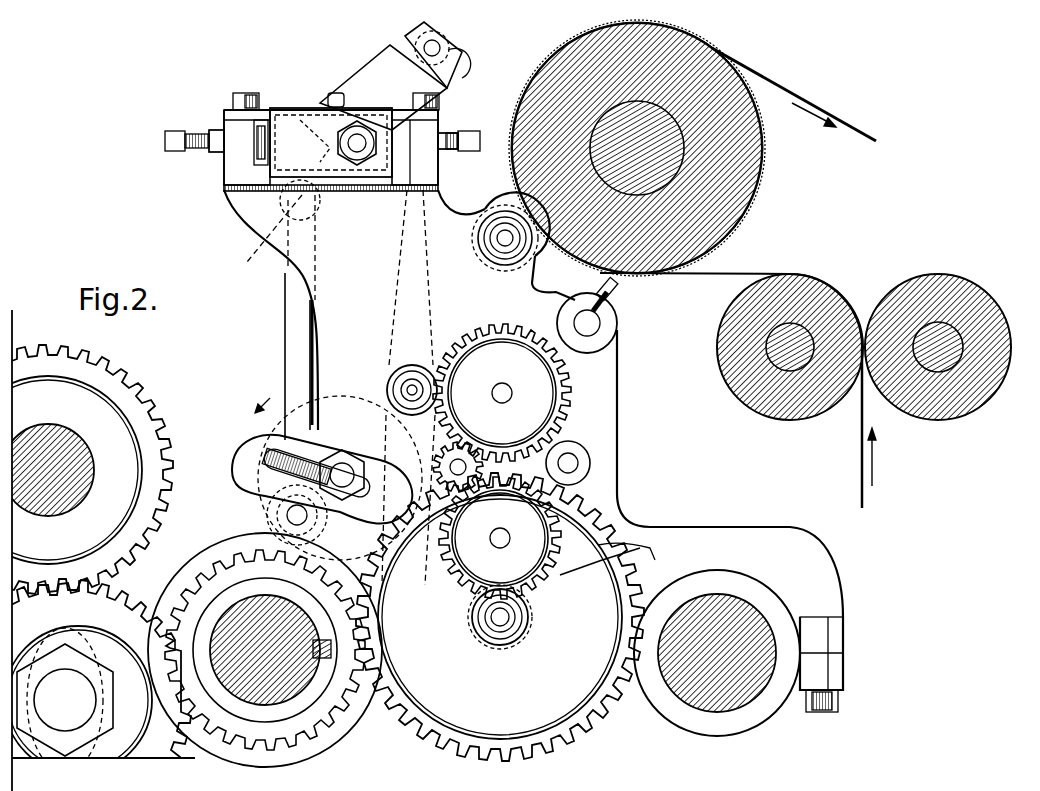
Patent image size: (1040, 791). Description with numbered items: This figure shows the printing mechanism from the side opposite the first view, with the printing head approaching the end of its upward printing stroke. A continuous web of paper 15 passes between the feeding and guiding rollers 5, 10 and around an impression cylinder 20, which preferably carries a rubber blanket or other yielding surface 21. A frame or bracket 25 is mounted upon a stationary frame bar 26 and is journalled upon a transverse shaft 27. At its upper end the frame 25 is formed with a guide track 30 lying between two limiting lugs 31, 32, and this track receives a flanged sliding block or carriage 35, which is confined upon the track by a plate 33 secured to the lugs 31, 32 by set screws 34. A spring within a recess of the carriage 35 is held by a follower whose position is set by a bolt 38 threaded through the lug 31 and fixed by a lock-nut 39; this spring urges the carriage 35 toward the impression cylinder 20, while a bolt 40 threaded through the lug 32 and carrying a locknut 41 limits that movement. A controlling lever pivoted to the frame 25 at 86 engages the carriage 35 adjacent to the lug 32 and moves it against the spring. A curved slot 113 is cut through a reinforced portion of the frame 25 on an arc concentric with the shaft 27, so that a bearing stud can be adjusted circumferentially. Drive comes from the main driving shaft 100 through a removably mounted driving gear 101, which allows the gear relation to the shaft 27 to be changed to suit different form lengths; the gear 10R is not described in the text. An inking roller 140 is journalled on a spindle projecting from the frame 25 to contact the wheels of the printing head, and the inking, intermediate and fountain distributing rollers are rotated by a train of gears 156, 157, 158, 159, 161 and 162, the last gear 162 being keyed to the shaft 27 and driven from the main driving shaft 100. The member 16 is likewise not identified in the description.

The feeding and guiding roller 5 is at (935, 418).
The feeding and guiding roller 10 is at (768, 412).
The gear 10R is at (165, 606).
The continuous web of paper 15 is at (858, 110).
The frame member 16 is at (290, 312).
The impression cylinder 20 is at (755, 182).
The yielding surface 21 is at (742, 222).
The frame 25 is at (270, 240).
The stationary frame bar 26 is at (700, 700).
The transverse shaft 27 is at (246, 600).
The guide track 30 is at (245, 185).
The limiting lug 31 is at (234, 150).
The limiting lug 32 is at (432, 130).
The plate 33 is at (262, 110).
The set screw 34 is at (242, 95).
The sliding block or carriage 35 is at (285, 122).
The bolt 38 is at (168, 140).
The lock-nut 39 is at (210, 132).
The bolt 40 is at (476, 152).
The locknut 41 is at (446, 152).
The lever pivot 86 is at (411, 370).
The main driving shaft 100 is at (86, 455).
The driving gear 101 is at (166, 440).
The curved slot 113 is at (330, 442).
The inking roller 140 is at (500, 218).
The gear 156 is at (560, 392).
The gear 157 is at (482, 468).
The gear 158 is at (548, 522).
The gear 159 is at (494, 637).
The gear 161 is at (640, 560).
The gear 162 is at (420, 725).